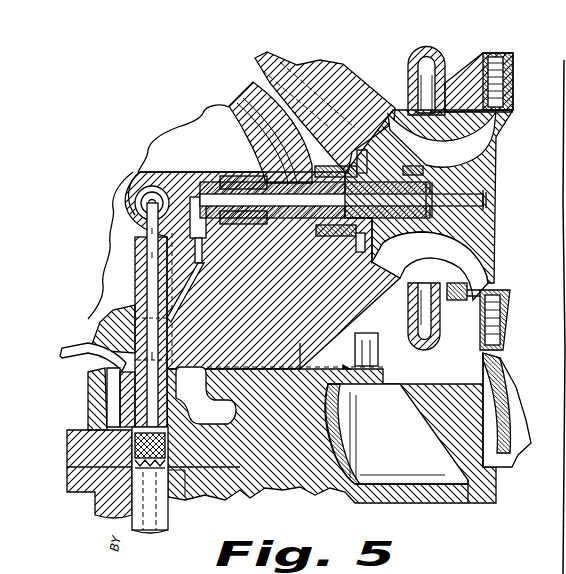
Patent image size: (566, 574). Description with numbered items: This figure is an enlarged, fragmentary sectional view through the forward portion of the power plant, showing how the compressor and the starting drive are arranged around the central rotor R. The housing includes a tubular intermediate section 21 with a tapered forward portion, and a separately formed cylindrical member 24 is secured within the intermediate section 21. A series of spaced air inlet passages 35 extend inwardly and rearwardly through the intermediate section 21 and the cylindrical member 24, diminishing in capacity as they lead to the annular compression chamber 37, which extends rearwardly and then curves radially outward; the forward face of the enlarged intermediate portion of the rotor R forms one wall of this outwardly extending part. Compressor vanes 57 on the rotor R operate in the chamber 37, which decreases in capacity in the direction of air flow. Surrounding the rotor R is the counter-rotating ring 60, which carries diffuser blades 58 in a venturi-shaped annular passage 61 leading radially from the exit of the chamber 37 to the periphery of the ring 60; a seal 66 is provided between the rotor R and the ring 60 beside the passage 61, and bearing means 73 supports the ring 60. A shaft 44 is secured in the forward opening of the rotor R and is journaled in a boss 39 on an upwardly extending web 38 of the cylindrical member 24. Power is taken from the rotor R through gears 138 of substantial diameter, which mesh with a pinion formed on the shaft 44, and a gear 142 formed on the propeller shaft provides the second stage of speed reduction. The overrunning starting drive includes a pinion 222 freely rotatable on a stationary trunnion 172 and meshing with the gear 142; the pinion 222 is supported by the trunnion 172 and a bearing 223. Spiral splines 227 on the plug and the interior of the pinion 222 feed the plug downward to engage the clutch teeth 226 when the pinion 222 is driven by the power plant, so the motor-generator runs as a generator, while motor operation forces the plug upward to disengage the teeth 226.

The gears 138 is at (228, 106).
The boss 39 is at (202, 172).
The web 38 is at (240, 272).
The shaft 44 is at (329, 175).
The bearing means 73 is at (447, 68).
The counter-rotating ring 60 is at (472, 68).
The diffuser blades 58 is at (511, 70).
The compressor vanes 57 is at (453, 160).
The rotor R is at (496, 177).
The compression chamber 37 is at (383, 258).
The annular passage 61 is at (498, 317).
The seal 66 is at (467, 300).
The cylindrical member 24 is at (383, 364).
The intermediate section 21 is at (395, 503).
The air inlet passages 35 is at (270, 452).
The stationary trunnion 172 is at (88, 349).
The gear 142 is at (100, 391).
The bearing 223 is at (110, 432).
The pinion 222 is at (206, 395).
The spiral splines 227 is at (185, 474).
The clutch teeth 226 is at (165, 520).